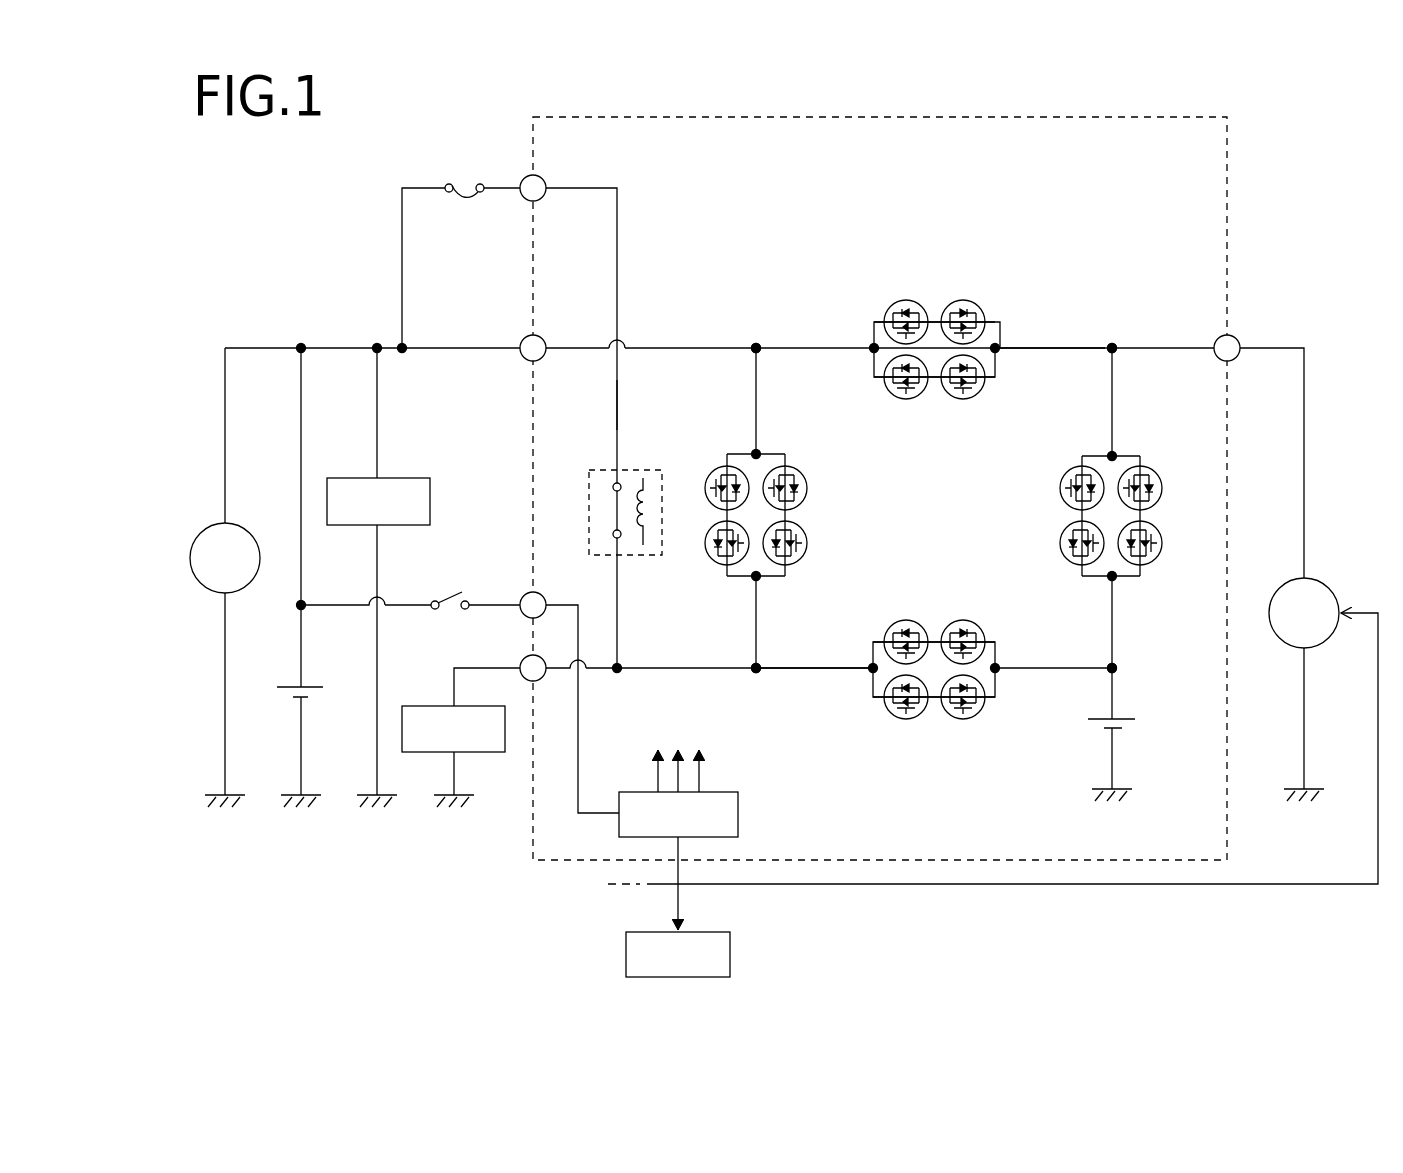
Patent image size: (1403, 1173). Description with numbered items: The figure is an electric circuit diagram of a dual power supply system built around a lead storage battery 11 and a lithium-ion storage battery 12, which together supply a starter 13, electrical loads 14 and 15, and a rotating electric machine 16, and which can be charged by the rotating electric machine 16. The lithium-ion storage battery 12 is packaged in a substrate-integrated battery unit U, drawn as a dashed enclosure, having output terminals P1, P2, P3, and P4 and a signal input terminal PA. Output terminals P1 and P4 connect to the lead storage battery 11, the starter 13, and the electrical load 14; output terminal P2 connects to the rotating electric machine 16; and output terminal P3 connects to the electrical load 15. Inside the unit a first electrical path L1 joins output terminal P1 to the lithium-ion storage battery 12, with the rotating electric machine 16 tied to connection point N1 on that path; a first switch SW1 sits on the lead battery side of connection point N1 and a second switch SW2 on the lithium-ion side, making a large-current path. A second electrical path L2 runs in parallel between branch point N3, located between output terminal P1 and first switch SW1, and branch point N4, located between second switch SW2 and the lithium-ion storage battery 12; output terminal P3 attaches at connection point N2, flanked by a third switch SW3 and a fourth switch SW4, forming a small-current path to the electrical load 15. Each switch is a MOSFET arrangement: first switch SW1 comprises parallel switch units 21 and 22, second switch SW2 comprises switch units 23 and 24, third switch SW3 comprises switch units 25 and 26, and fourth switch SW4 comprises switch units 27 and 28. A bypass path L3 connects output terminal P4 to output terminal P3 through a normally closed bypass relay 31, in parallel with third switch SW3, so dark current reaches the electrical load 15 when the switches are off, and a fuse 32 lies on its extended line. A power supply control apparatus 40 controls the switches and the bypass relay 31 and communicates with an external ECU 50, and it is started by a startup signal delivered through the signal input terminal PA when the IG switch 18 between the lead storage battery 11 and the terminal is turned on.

The lead storage battery 11 is at (322, 687).
The lithium-ion storage battery 12 is at (1132, 718).
The starter 13 is at (250, 532).
The electrical load 14 is at (400, 478).
The electrical load 15 is at (425, 706).
The rotating electric machine 16 is at (1329, 587).
The IG switch 18 is at (446, 600).
The switch unit 21 is at (975, 308).
The switch unit 22 is at (977, 395).
The switch unit 23 is at (1156, 477).
The switch unit 24 is at (1065, 480).
The switch unit 25 is at (801, 473).
The switch unit 26 is at (712, 473).
The switch unit 27 is at (888, 632).
The switch unit 28 is at (910, 719).
The bypass relay 31 is at (652, 557).
The fuse 32 is at (449, 185).
The power supply control apparatus 40 is at (724, 792).
The ECU 50 is at (732, 962).
The first switch SW1 is at (910, 348).
The second switch SW2 is at (1090, 527).
The third switch SW3 is at (786, 520).
The fourth switch SW4 is at (952, 685).
The output terminal P1 is at (526, 338).
The output terminal P2 is at (1237, 338).
The output terminal P3 is at (526, 665).
The output terminal P4 is at (526, 179).
The signal input terminal PA is at (526, 603).
The connection point N1 is at (1114, 345).
The connection point N2 is at (757, 676).
The branch point N3 is at (756, 344).
The branch point N4 is at (1117, 664).
The first electrical path L1 is at (1053, 346).
The second electrical path L2 is at (813, 676).
The bypass path L3 is at (619, 405).
The battery unit U is at (1177, 115).